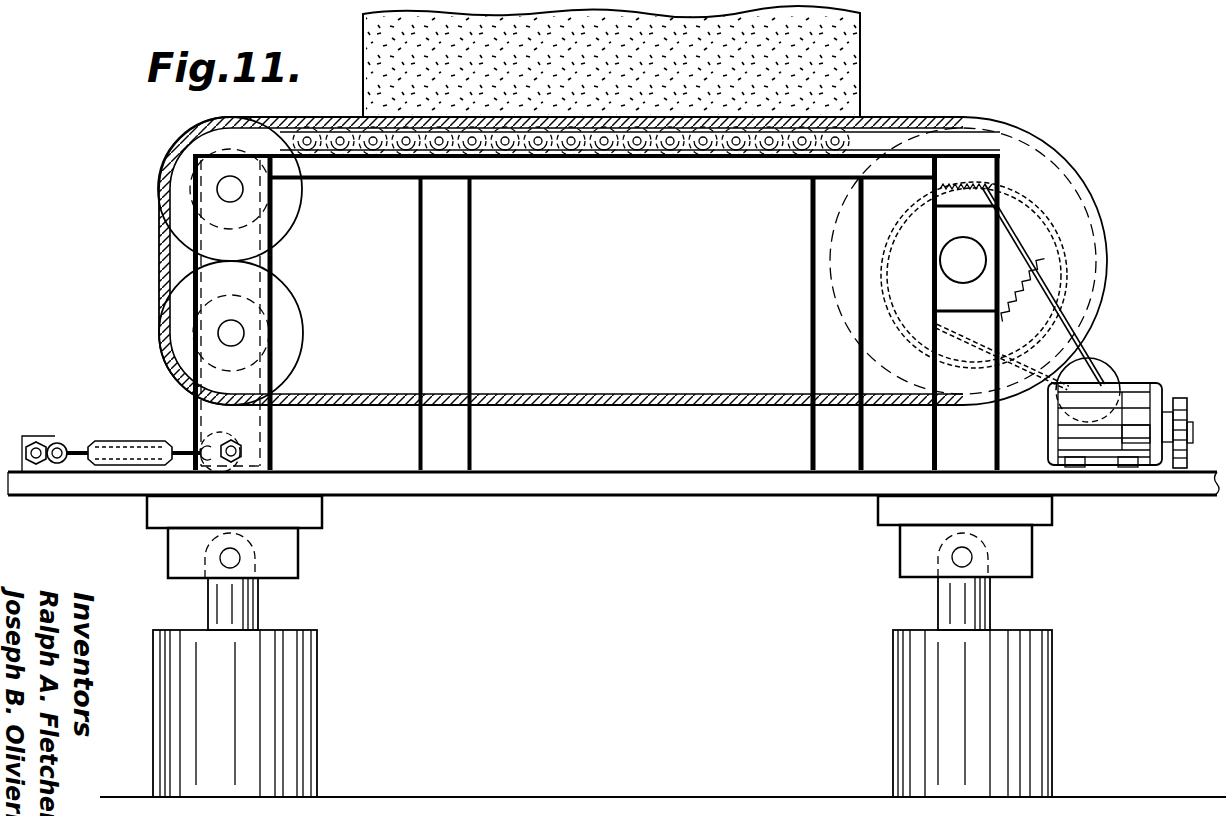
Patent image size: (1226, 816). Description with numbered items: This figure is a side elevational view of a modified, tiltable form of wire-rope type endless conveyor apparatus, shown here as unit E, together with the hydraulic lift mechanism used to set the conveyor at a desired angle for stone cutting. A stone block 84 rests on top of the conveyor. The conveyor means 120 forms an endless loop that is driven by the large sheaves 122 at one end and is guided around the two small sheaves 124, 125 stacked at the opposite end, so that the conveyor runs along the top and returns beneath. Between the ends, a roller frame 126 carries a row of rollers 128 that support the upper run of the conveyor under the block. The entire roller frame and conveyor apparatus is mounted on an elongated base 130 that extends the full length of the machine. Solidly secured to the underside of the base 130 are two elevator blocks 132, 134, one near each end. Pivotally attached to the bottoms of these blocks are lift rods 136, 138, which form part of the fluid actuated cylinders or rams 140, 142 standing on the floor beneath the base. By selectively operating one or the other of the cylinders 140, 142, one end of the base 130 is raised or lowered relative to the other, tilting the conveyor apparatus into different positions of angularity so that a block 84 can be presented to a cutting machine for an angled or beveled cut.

The block 84 is at (855, 73).
The conveyor unit E is at (986, 105).
The conveyor means 120 is at (643, 393).
The sheaves 122 is at (1082, 223).
The small sheave 124 is at (279, 204).
The small sheave 125 is at (279, 311).
The roller frame 126 is at (766, 173).
The rollers 128 is at (699, 147).
The elongated base 130 is at (1212, 489).
The elevator block 132 is at (310, 513).
The elevator block 134 is at (1037, 515).
The lift rod 136 is at (250, 603).
The lift rod 138 is at (990, 603).
The fluid actuated cylinder 140 is at (313, 685).
The fluid actuated cylinder 142 is at (1052, 690).